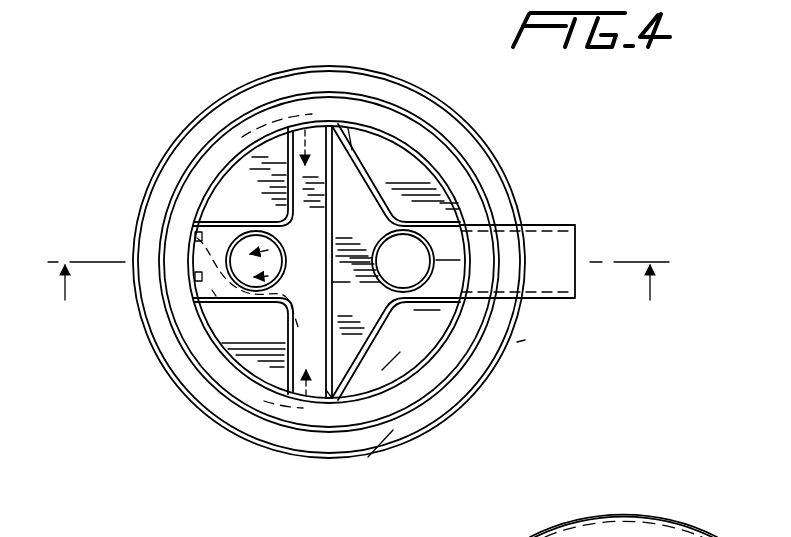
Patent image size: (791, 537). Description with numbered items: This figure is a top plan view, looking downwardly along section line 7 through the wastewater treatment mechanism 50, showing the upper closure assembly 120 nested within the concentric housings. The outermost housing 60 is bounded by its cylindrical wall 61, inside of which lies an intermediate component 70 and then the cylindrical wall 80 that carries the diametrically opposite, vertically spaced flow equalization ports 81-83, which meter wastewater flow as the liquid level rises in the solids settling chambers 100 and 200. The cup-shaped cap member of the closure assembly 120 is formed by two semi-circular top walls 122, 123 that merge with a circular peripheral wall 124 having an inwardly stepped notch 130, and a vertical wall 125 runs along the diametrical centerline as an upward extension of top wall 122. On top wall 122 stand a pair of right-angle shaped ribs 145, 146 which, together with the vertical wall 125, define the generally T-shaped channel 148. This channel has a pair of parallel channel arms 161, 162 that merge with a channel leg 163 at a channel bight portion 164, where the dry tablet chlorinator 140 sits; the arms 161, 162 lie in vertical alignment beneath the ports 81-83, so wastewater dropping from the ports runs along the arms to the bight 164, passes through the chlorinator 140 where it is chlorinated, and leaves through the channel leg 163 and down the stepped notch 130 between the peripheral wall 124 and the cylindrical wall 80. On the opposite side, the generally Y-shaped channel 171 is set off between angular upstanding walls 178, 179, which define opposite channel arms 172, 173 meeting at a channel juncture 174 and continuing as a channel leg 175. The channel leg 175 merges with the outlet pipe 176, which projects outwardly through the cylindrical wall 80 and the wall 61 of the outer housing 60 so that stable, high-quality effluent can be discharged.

The section line 7- 7 is at (360, 283).
The wastewater treatment mechanism 50 is at (707, 505).
The outermost housing 60 is at (519, 342).
The cylindrical wall 61 is at (208, 107).
The component of the wastewater treatment mechanism 70 is at (263, 105).
The cylindrical wall 80 is at (206, 199).
The flow equalization ports 81-83 is at (311, 115).
The solids settling chamber 100 is at (393, 431).
The upper closure assembly 120 is at (383, 370).
The semi-circular top wall 122 is at (318, 237).
The semi-circular top wall 123 is at (442, 317).
The peripheral wall 124 is at (217, 354).
The vertical wall 125 is at (415, 183).
The inwardly stepped notch 130 is at (194, 252).
The dry tablet chlorinator 140 is at (197, 224).
The right-angle shaped rib 145 is at (248, 223).
The right-angle shaped rib 146 is at (258, 300).
The T-shaped channel 148 is at (309, 285).
The channel arm 161 is at (320, 129).
The channel arm 162 is at (336, 384).
The channel leg 163 is at (213, 288).
The channel bight portion 164 is at (283, 257).
The Y-shaped channel 171 is at (390, 215).
The channel arm 172 is at (342, 158).
The channel arm 173 is at (346, 353).
The channel juncture 174 is at (420, 271).
The channel leg 175 is at (453, 261).
The outlet pipe 176 is at (566, 272).
The angular upstanding wall 178 is at (371, 231).
The angular upstanding wall 179 is at (376, 325).
The solids settling chamber 200 is at (200, 340).